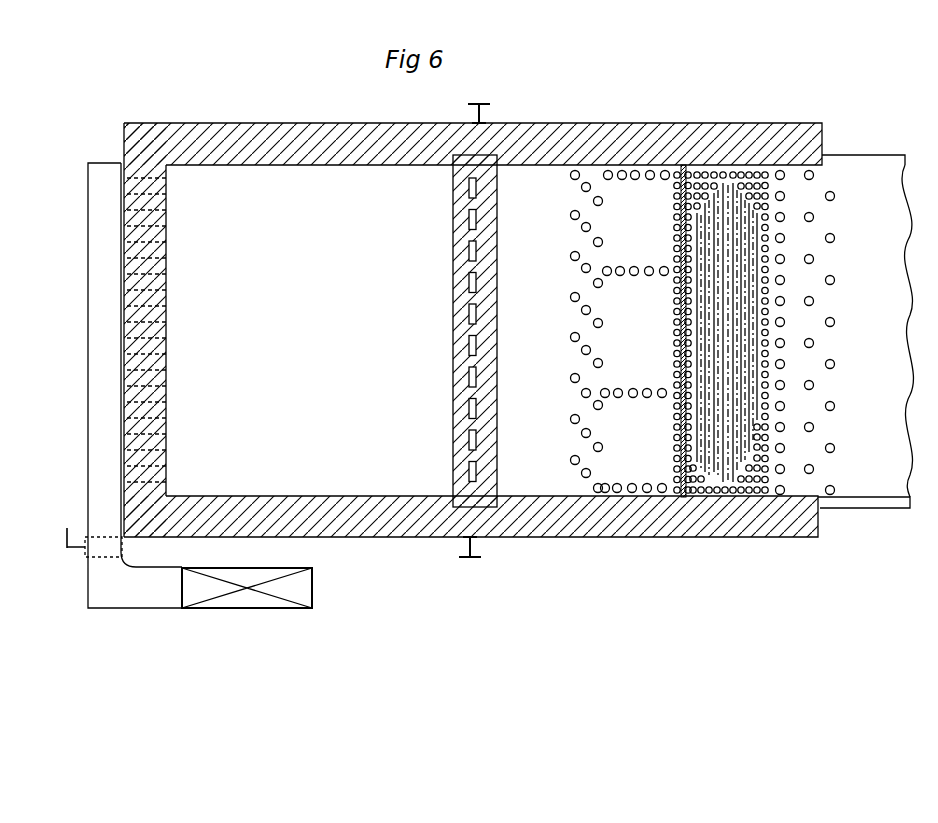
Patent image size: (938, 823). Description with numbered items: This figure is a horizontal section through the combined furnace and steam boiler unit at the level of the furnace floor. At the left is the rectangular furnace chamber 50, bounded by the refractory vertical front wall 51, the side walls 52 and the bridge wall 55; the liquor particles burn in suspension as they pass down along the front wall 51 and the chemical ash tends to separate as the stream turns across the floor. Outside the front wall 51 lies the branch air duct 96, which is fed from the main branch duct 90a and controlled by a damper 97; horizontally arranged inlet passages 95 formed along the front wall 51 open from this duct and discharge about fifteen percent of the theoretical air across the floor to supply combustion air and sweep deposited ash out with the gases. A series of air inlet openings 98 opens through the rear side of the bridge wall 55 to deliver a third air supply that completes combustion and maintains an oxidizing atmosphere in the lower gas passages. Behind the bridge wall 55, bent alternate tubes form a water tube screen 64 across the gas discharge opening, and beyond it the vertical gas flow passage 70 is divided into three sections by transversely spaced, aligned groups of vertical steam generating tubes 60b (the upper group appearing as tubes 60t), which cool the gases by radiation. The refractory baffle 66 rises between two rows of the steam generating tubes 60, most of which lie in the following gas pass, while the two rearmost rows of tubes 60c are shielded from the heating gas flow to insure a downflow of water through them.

The furnace chamber 50 is at (315, 342).
The vertical front wall 51 is at (166, 331).
The side walls 52 is at (316, 165).
The bridge wall 55 is at (452, 374).
The steam generating tubes 60 is at (756, 436).
The top row of tubes 60t is at (664, 276).
The groups of vertical steam generating tubes 60b is at (662, 485).
The two rearmost rows of tubes 60c is at (809, 304).
The water tube screen 64 is at (592, 325).
The refractory baffle 66 is at (684, 369).
The vertical gas flow passage 70 is at (646, 354).
The main branch duct 90a is at (254, 644).
The inlet passages 95 is at (170, 468).
The branch air duct 96 is at (88, 410).
The damper 97 is at (82, 558).
The air inlet openings 98 is at (498, 195).